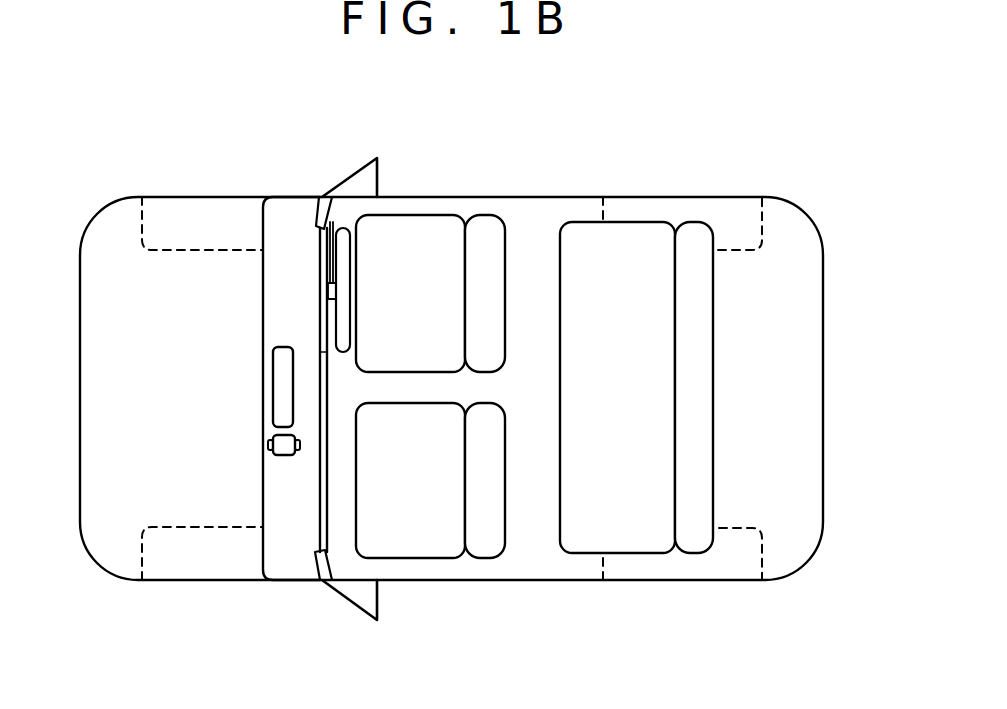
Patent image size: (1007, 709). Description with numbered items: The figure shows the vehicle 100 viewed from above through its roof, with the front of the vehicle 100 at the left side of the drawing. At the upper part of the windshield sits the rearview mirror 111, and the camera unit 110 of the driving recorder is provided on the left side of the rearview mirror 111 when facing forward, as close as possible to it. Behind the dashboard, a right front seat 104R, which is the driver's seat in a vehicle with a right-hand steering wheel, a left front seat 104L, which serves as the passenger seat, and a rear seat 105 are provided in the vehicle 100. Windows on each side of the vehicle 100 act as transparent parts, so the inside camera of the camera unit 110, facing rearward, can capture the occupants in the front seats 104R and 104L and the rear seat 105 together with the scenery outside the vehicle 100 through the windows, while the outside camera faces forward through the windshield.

The vehicle 100 is at (791, 202).
The right front seat 104R is at (428, 215).
The left front seat 104L is at (432, 558).
The rear seat 105 is at (585, 222).
The camera unit 110 is at (285, 456).
The rearview mirror 111 is at (283, 347).